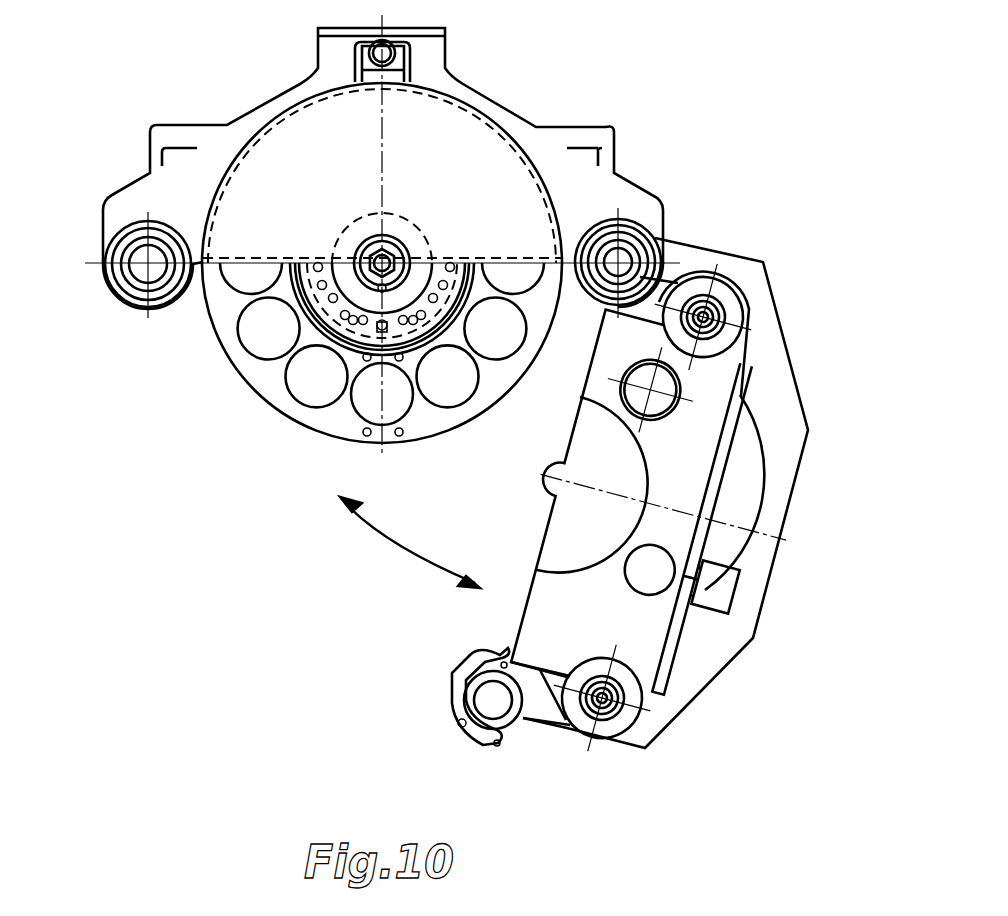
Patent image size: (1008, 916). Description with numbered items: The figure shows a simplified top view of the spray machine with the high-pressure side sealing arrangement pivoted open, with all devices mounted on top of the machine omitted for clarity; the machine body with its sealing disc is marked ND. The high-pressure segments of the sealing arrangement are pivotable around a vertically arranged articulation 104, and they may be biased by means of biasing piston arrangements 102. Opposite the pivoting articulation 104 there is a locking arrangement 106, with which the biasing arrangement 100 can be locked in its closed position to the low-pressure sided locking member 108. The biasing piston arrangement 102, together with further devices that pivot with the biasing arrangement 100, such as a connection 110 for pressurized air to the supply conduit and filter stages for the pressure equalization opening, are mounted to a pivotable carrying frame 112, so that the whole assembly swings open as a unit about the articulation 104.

The nose / tool disc housing ND is at (520, 110).
The biasing arrangement 100 is at (800, 498).
The biasing piston arrangement 102 is at (710, 316).
The articulation 104 is at (622, 262).
The locking arrangement 106 is at (487, 699).
The low-pressure sided locking member 108 is at (141, 278).
The connection for pressurized air 110 is at (723, 602).
The pivotable carrying frame 112 is at (693, 680).